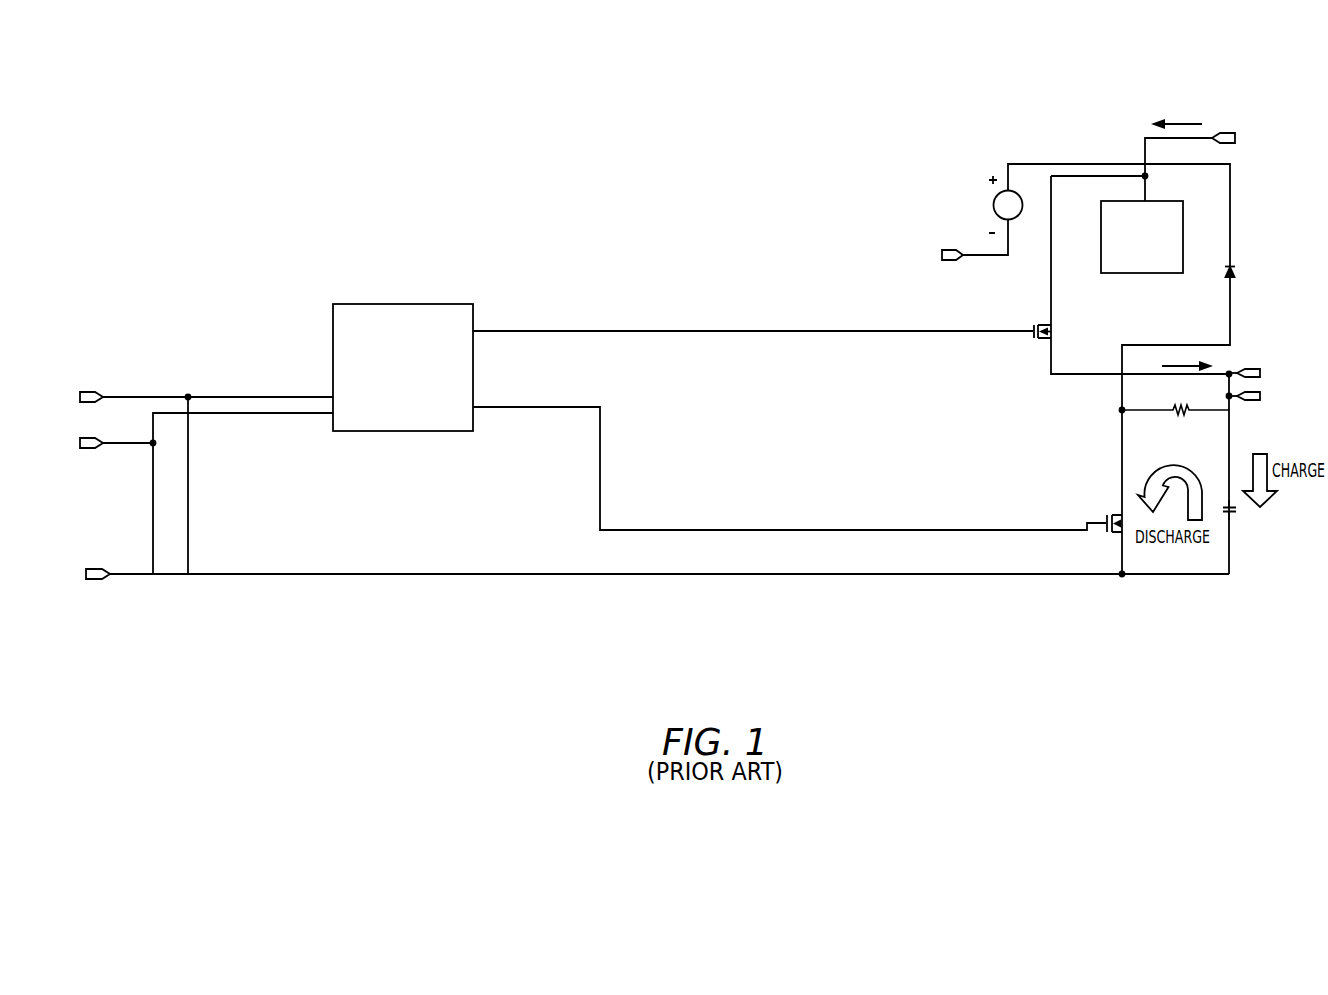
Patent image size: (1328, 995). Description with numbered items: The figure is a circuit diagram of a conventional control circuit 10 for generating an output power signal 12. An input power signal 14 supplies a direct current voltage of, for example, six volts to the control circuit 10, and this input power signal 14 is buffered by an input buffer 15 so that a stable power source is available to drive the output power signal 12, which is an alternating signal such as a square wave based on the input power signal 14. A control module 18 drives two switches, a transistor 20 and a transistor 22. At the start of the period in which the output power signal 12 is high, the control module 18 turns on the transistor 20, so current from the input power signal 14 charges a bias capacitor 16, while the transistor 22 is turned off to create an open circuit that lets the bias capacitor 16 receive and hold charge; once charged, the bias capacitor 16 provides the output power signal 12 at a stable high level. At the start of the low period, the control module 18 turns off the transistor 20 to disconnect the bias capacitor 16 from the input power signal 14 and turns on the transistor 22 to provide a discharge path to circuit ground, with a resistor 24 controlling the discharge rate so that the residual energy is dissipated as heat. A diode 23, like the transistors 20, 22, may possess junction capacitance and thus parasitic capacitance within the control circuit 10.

The control circuit 10 is at (208, 81).
The output power signal 12 is at (1185, 366).
The input power signal 14 is at (1182, 124).
The input buffer 15 is at (1150, 248).
The bias capacitor 16 is at (1231, 513).
The control module 18 is at (391, 304).
The transistor 20 is at (1040, 346).
The transistor 22 is at (1111, 536).
The diode 23 is at (1239, 271).
The resistor 24 is at (1175, 399).